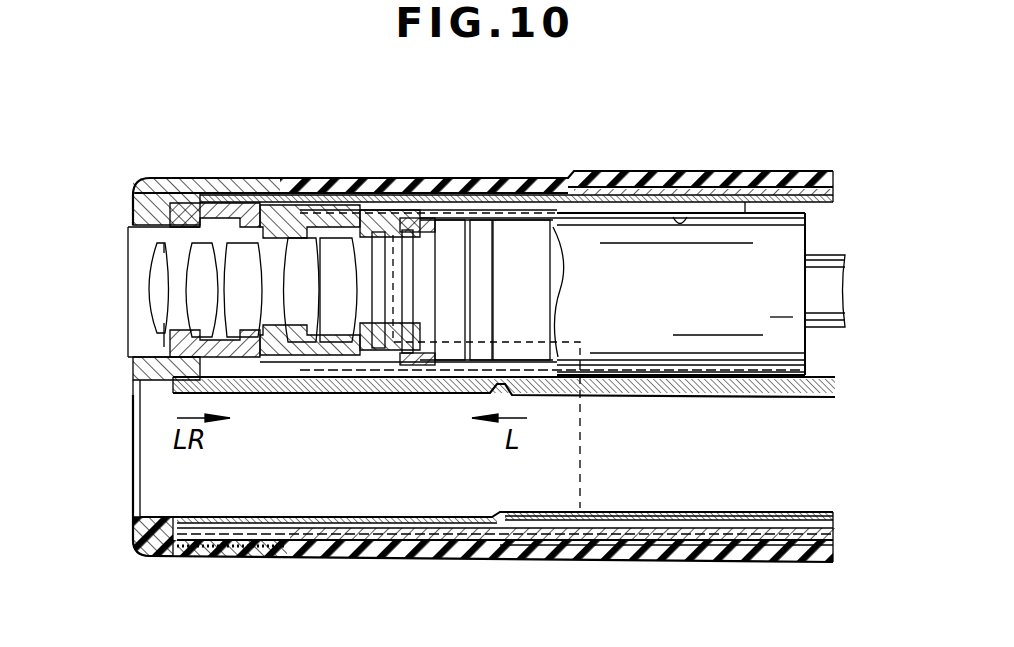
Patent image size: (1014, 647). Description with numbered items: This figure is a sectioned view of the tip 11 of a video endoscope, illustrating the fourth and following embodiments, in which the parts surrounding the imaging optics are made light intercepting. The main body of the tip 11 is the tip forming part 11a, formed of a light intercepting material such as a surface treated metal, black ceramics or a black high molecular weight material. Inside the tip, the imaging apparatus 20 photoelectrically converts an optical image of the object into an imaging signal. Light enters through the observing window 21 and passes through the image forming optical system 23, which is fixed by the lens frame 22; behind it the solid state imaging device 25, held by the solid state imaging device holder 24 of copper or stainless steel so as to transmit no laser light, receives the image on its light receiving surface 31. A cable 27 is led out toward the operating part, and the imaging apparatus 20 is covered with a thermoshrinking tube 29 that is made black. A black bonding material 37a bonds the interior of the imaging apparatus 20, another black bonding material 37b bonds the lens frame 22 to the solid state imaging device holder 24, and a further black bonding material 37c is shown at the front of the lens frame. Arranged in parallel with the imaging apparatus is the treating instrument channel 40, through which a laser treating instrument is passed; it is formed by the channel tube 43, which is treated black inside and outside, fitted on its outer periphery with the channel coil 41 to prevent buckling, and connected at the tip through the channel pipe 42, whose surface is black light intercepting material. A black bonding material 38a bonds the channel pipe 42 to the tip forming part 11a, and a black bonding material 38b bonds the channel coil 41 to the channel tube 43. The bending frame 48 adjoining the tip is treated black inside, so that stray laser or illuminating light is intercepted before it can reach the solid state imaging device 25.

The tip 11 is at (130, 520).
The tip forming part 11a is at (152, 530).
The imaging apparatus 20 is at (410, 200).
The observing window 21 is at (137, 306).
The lens frame 22 is at (170, 242).
The image forming optical system 23 is at (247, 193).
The solid state imaging device holder 24 is at (310, 248).
The solid state imaging device 25 is at (510, 250).
The cable 27 is at (835, 297).
The thermoshrinking tube 29 is at (752, 200).
The light receiving surface 31 is at (488, 255).
The black bonding material 37a is at (678, 198).
The black bonding material 37b is at (318, 196).
The front wall portion 37c is at (150, 372).
The black bonding material 38a is at (288, 548).
The black bonding material 38b is at (583, 560).
The treating instrument channel 40 is at (170, 476).
The channel coil 41 is at (697, 560).
The channel pipe 42 is at (353, 536).
The channel tube 43 is at (800, 513).
The bending frame 48 is at (560, 196).